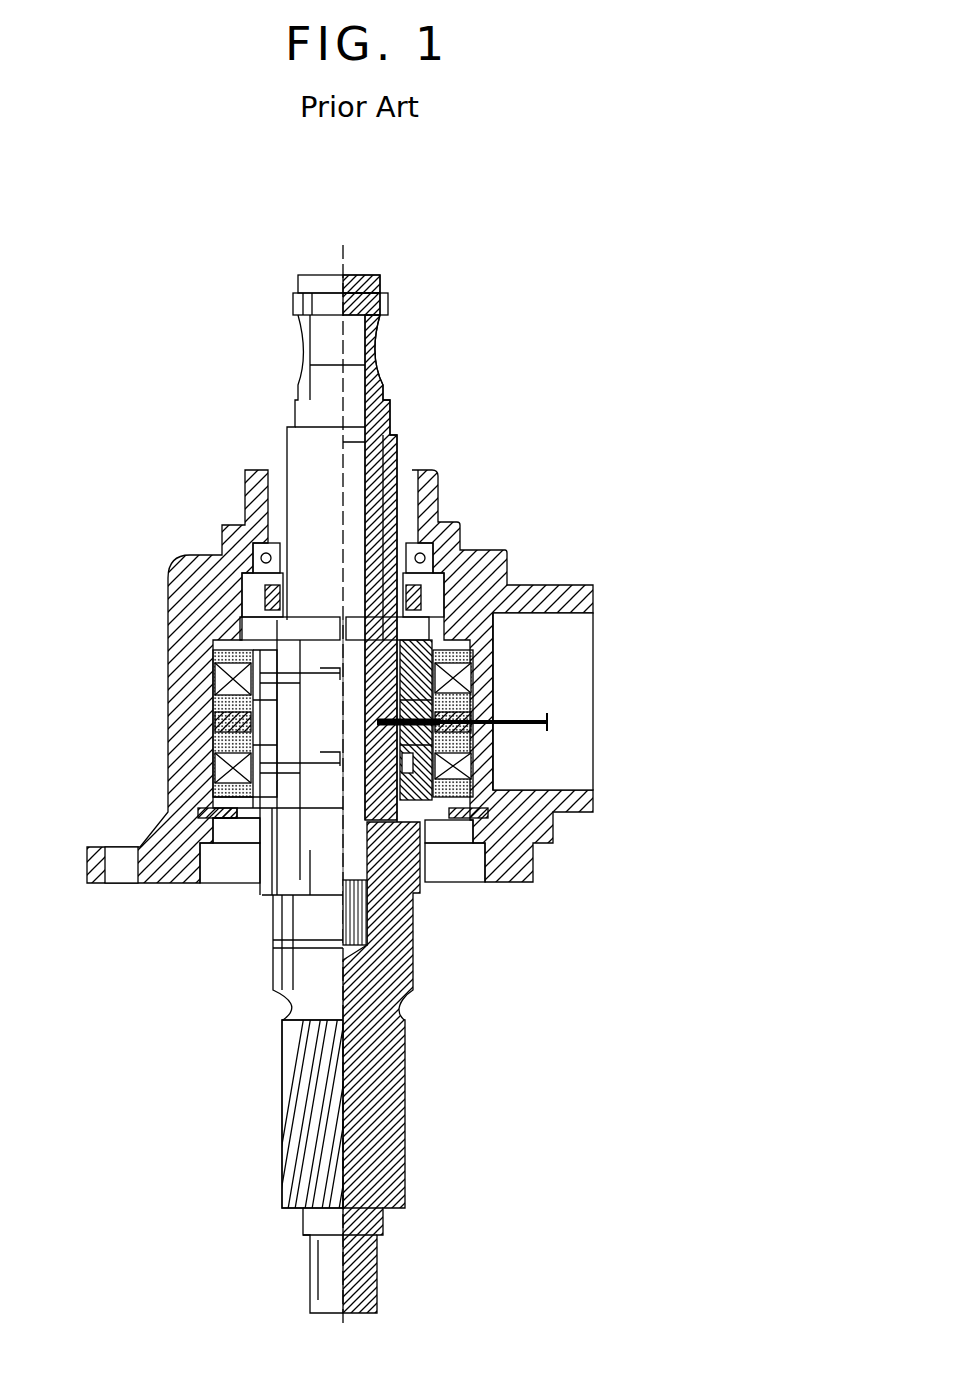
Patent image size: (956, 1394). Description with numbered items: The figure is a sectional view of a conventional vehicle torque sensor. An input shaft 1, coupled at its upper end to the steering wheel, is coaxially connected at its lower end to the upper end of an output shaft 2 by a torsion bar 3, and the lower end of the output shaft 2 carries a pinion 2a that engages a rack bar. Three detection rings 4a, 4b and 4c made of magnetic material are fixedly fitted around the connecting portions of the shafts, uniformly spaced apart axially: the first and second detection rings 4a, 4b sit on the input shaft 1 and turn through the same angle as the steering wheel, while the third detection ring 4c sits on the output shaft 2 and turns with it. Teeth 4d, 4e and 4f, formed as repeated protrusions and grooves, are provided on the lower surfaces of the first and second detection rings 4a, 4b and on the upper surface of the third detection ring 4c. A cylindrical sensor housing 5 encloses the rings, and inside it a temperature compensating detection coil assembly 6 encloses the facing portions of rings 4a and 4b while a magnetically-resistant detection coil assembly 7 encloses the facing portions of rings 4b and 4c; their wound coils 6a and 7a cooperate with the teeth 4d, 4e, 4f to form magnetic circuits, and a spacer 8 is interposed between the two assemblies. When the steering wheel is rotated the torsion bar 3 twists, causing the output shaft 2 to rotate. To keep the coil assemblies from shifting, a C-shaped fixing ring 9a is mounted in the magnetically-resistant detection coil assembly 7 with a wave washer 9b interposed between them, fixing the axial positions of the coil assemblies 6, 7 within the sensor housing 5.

The input shaft 1 is at (392, 410).
The output shaft 2 is at (396, 942).
The pinion 2a is at (290, 1100).
The torsion bar 3 is at (384, 462).
The first detection ring 4a is at (268, 608).
The second detection ring 4b is at (236, 668).
The third detection ring 4c is at (236, 768).
The teeth 4d is at (275, 645).
The teeth 4e is at (272, 705).
The teeth 4f is at (262, 725).
The sensor housing 5 is at (158, 560).
The temperature compensating detection coil assembly 6 is at (495, 668).
The wound coil 6a is at (495, 685).
The magnetically-resistant detection coil assembly 7 is at (495, 765).
The wound coil 7a is at (495, 745).
The spacer 8 is at (495, 705).
The fixing ring 9a is at (270, 800).
The wave washer 9b is at (245, 822).